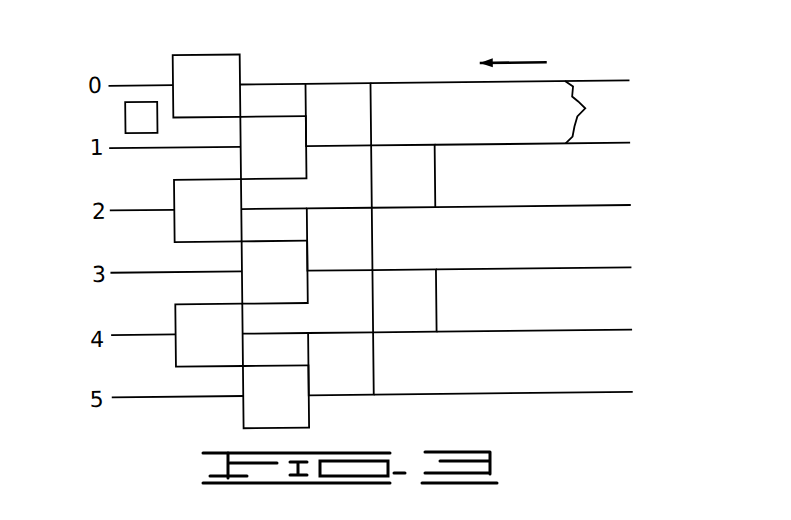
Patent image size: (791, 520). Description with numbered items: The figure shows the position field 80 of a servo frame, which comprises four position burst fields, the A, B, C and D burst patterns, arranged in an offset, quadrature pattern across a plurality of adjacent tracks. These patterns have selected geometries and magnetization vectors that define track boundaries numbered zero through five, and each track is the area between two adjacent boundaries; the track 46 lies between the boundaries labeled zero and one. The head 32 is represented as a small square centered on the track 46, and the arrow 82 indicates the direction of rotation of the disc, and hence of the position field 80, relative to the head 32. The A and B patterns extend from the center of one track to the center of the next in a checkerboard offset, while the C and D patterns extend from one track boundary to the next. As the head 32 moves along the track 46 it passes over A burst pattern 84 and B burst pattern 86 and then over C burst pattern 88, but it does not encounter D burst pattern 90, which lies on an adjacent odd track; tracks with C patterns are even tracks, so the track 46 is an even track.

The head 32 is at (132, 119).
The track 46 is at (598, 114).
The position field 80 is at (360, 64).
The arrow 82 is at (530, 55).
The A burst pattern 84 is at (202, 63).
The B burst pattern 86 is at (291, 170).
The C burst pattern 88 is at (328, 138).
The D burst pattern 90 is at (412, 202).